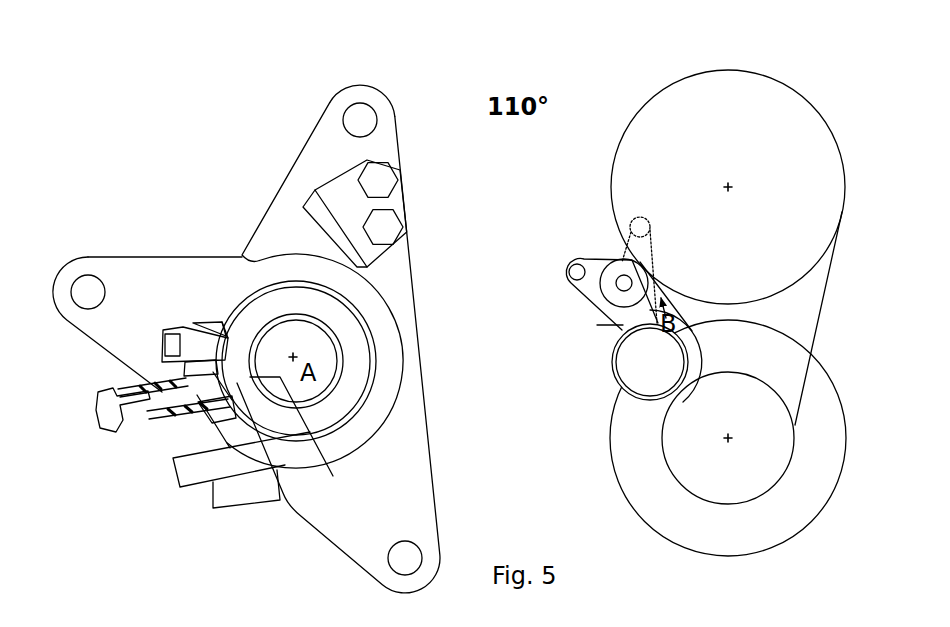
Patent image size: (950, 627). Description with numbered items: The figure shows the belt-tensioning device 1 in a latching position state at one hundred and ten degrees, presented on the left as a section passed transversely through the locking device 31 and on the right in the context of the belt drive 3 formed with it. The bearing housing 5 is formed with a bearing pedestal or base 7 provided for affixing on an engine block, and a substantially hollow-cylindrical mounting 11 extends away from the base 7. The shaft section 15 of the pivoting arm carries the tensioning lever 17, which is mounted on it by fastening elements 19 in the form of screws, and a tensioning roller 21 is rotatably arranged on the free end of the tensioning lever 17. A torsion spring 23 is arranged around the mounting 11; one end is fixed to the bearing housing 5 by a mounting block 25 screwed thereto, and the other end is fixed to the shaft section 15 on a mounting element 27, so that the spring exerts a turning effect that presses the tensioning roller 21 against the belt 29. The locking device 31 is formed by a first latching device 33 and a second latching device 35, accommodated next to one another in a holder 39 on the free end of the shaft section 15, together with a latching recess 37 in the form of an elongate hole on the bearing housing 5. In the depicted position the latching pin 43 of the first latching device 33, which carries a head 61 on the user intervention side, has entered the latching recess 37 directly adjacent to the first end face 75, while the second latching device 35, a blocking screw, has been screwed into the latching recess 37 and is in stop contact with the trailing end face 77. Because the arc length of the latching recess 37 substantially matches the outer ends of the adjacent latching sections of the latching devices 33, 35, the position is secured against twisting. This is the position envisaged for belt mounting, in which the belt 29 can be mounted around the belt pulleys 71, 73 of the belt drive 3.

The belt-tensioning device 1 is at (250, 287).
The belt drive 3 is at (762, 315).
The bearing housing 5 is at (285, 235).
The bearing pedestal or base 7 is at (592, 268).
The mounting 11 is at (327, 417).
The shaft section 15 is at (355, 353).
The tensioning lever 17 is at (630, 327).
The fastening elements 19 is at (83, 285).
The tensioning roller 21 is at (623, 365).
The torsion spring 23 is at (383, 395).
The mounting block 25 is at (368, 211).
The mounting element 27 is at (245, 495).
The belt 29 is at (705, 352).
The locking device 31 is at (285, 442).
The first latching device 33 is at (100, 405).
The second latching device 35 is at (193, 348).
The latching recess 37 is at (247, 376).
The holder 39 is at (197, 330).
The latching pin 43 is at (205, 425).
The head 61 is at (113, 425).
The belt pulley 71 is at (762, 88).
The belt pulley 73 is at (822, 492).
The first end face 75 is at (293, 508).
The trailing end face 77 is at (222, 337).